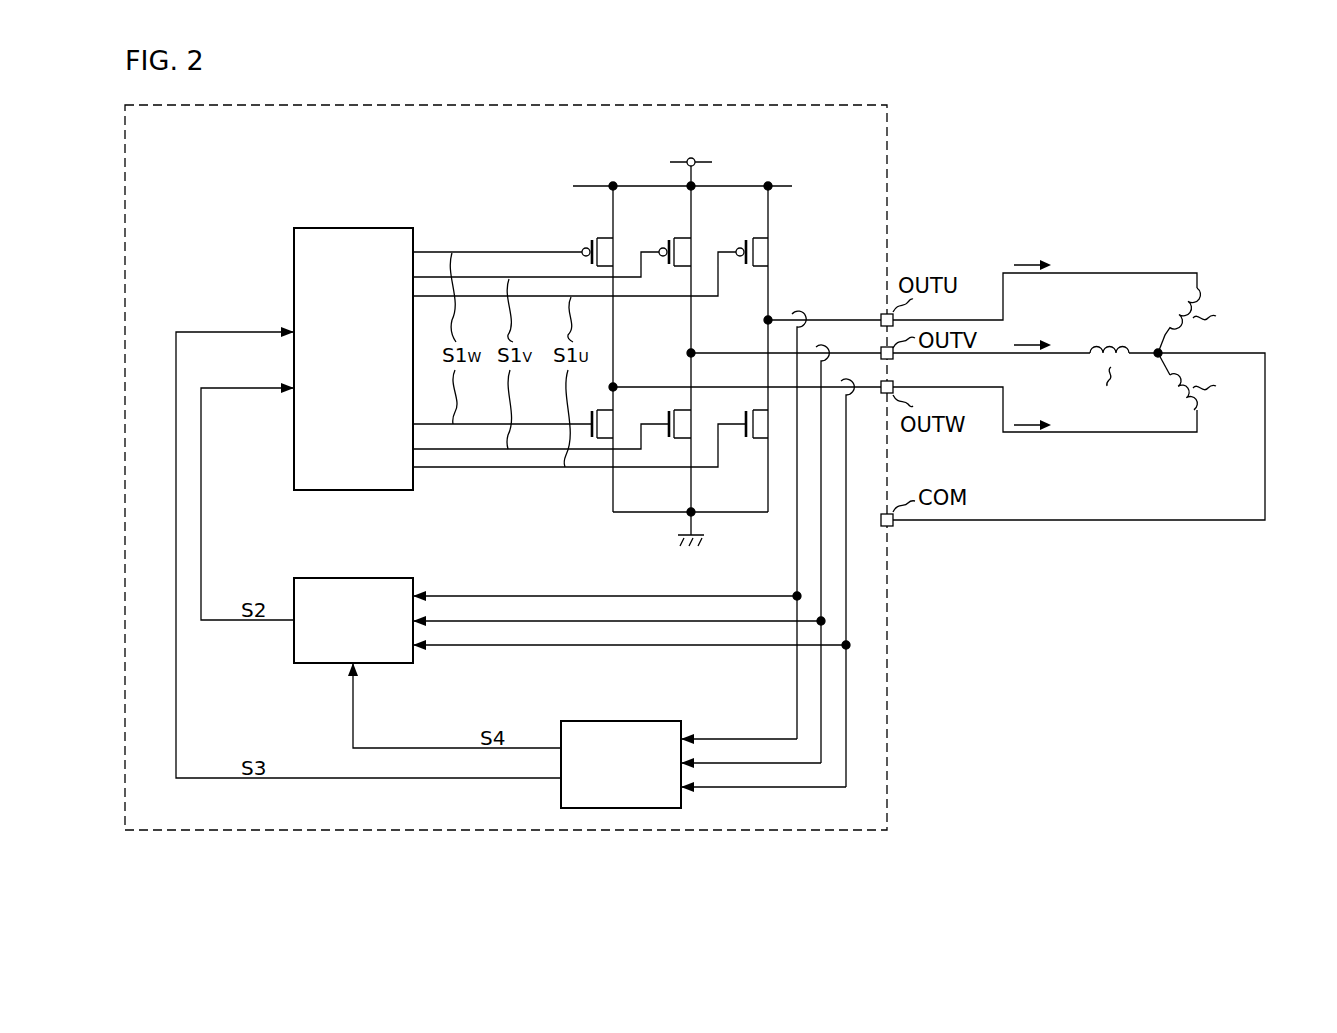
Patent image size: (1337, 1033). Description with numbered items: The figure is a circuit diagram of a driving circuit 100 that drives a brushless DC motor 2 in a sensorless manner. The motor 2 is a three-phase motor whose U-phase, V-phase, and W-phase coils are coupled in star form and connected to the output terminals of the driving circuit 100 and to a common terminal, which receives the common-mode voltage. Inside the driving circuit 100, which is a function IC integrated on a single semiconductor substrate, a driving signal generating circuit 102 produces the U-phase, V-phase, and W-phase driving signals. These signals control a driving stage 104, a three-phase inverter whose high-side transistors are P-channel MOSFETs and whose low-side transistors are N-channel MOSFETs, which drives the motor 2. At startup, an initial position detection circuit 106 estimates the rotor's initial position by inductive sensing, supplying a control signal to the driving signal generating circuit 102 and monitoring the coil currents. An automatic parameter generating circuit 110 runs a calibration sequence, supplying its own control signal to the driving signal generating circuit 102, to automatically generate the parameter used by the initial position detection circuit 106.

The brushless DC motor 2 is at (1240, 254).
The driving circuit 100 is at (563, 105).
The driving signal generating circuit 102 is at (363, 227).
The driving stage 104 is at (744, 167).
The initial position detection circuit 106 is at (362, 578).
The automatic parameter generating circuit 110 is at (611, 721).